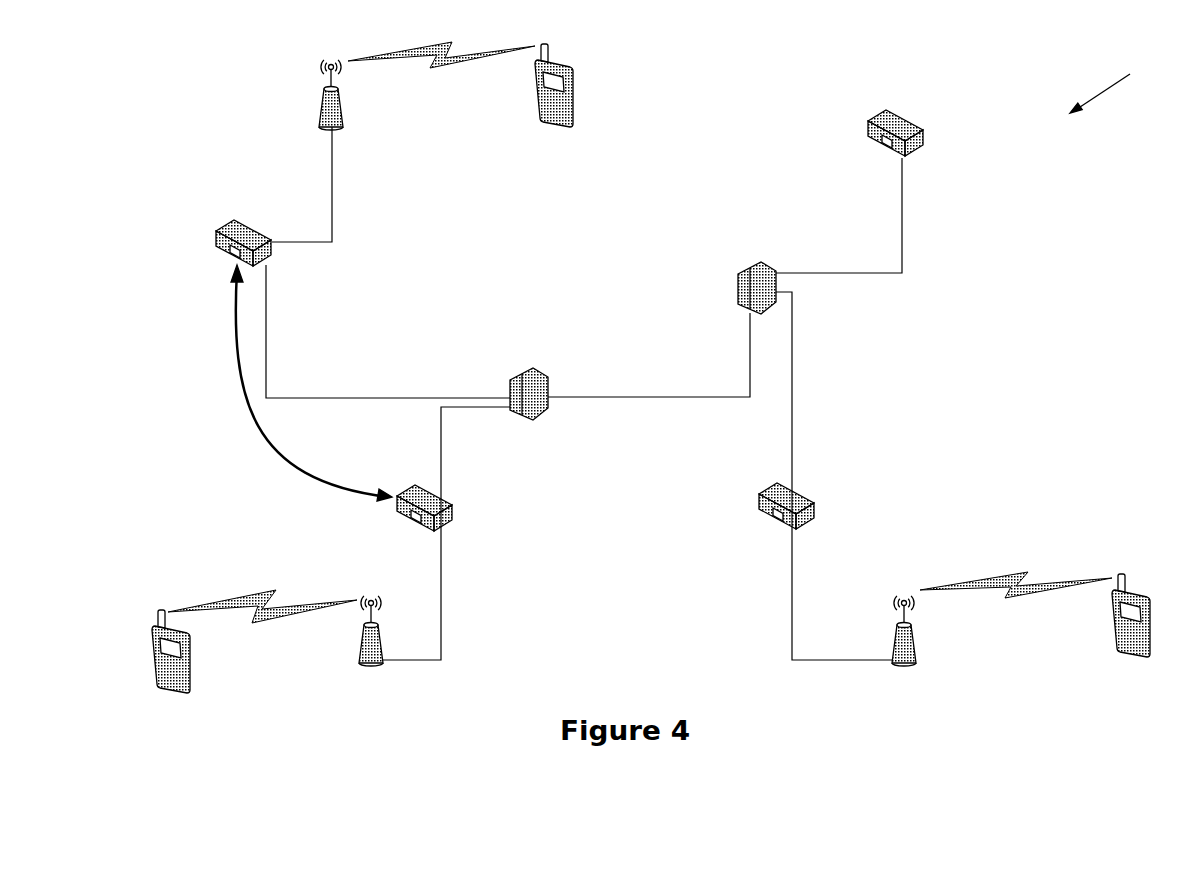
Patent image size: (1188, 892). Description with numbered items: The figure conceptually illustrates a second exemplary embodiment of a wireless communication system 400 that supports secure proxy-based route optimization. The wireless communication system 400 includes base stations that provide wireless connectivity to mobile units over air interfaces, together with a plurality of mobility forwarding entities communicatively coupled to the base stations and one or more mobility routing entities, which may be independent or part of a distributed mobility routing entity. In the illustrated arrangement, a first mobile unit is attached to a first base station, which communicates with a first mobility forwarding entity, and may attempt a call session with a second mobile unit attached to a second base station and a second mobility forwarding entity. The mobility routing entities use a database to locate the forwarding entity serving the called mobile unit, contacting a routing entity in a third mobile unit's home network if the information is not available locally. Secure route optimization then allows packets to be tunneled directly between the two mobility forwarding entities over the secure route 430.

The wireless communication system 400 is at (1117, 89).
The secure route 430 is at (232, 365).